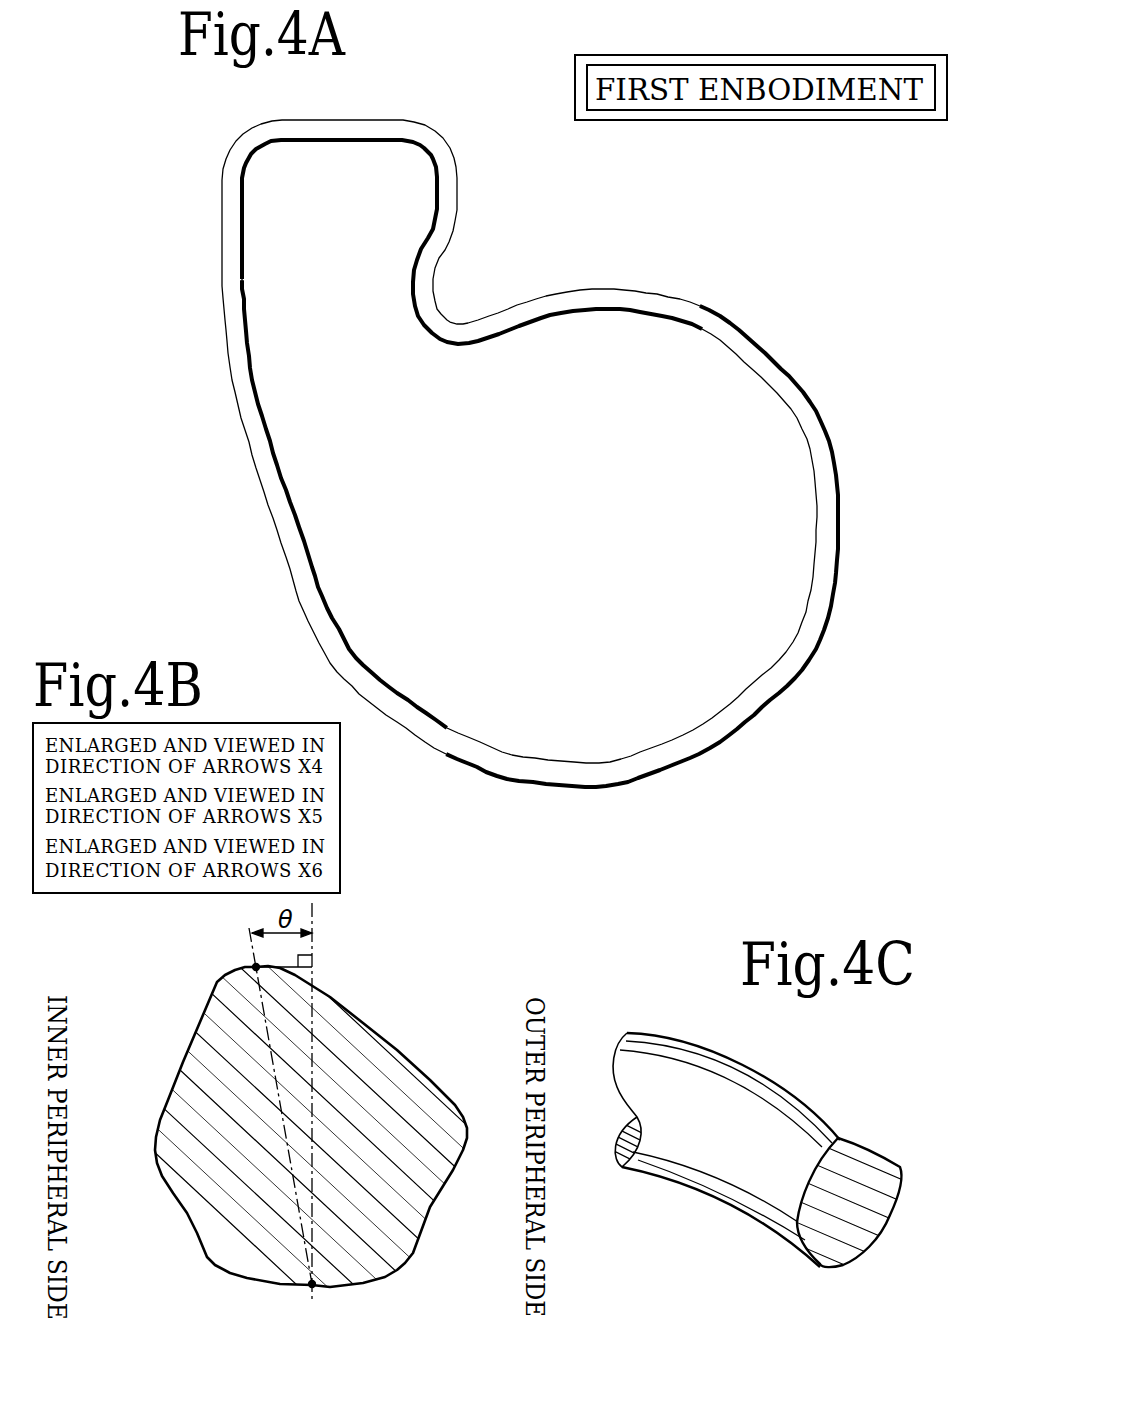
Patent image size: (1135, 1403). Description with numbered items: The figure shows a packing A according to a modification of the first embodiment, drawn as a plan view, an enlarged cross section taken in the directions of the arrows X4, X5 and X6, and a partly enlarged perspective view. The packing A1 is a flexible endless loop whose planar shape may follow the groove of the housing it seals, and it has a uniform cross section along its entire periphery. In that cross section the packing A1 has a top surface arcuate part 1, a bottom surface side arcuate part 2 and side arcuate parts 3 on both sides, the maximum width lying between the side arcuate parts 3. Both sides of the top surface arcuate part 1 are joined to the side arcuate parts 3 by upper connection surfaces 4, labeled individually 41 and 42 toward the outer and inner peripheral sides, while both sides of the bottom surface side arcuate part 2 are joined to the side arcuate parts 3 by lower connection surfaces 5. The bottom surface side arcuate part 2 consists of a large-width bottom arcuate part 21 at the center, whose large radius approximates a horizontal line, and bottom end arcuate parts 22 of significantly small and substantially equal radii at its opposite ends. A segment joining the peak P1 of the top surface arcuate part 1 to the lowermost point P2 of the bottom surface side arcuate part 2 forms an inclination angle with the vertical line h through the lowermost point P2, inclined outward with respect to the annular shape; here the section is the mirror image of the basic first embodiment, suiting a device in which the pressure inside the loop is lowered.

In FIG. 4A, the top surface arcuate part 1 is at (530, 473).
In FIG. 4B, the top surface arcuate part 1 is at (240, 966).
In FIG. 4C, the top surface arcuate part 1 is at (838, 1138).
In FIG. 4B, the bottom surface side arcuate part 2 is at (343, 1291).
In FIG. 4C, the bottom surface side arcuate part 2 is at (842, 1268).
In FIG. 4B, the bottom arcuate part 21 is at (268, 1288).
In FIG. 4B, the bottom end arcuate parts 22 is at (230, 1278).
In FIG. 4A, the side arcuate parts 3 is at (666, 745).
In FIG. 4B, the side arcuate parts 3 is at (156, 1142).
In FIG. 4C, the side arcuate parts 3 is at (902, 1165).
In FIG. 4B, the upper connection surfaces 4 is at (176, 1041).
In FIG. 4C, the upper connection surfaces 4 is at (868, 1150).
In FIG. 4B, the outer upper inclined surface 41 is at (388, 1044).
In FIG. 4B, the inner upper inclined surface 42 is at (165, 1086).
In FIG. 4B, the lower connection surfaces 5 is at (187, 1218).
In FIG. 4C, the lower connection surfaces 5 is at (892, 1202).
In FIG. 4A, the packing A is at (866, 356).
In FIG. 4B, the packing A is at (161, 953).
In FIG. 4A, the packing A1 is at (842, 452).
In FIG. 4B, the packing A1 is at (200, 1254).
In FIG. 4B, the peak P1 is at (245, 988).
In FIG. 4B, the lowermost point P2 is at (330, 1269).
In FIG. 4B, the vertical line h is at (313, 1134).
In FIG. 4A, the arrow X4 is at (731, 337).
In FIG. 4A, the arrow X5 is at (813, 610).
In FIG. 4A, the arrow X6 is at (566, 771).